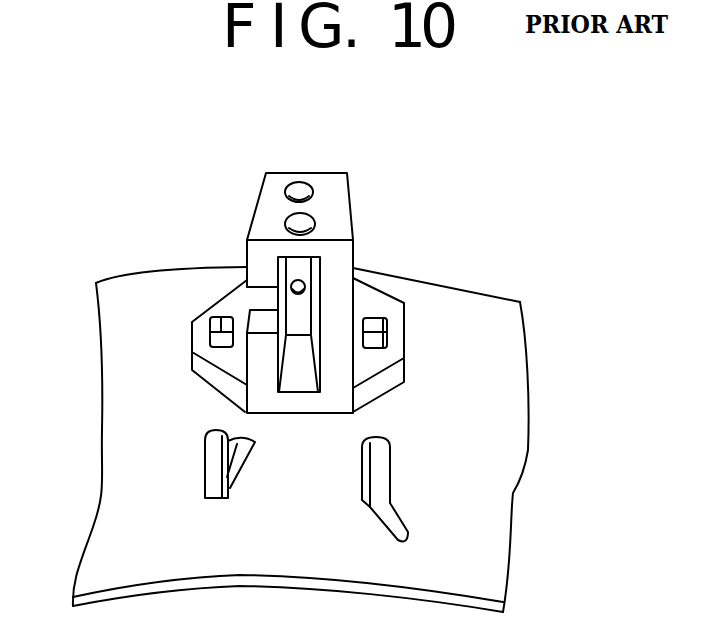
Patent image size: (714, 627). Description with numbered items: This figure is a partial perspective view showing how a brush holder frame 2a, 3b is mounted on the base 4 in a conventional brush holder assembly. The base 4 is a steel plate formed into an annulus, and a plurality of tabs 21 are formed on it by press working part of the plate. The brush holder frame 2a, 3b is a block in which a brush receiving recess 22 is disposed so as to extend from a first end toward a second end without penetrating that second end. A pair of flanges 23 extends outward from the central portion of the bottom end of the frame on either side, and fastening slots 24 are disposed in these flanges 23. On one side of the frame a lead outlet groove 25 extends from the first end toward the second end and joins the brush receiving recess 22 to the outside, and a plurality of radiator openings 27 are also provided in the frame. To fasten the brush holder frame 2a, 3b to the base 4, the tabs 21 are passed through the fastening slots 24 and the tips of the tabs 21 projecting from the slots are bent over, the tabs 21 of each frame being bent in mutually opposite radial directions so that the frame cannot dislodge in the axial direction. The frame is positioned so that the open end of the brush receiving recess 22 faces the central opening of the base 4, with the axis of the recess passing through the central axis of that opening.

The brush holder frame 2a is at (342, 282).
The brush holder frame 3b is at (342, 282).
The base 4 is at (492, 372).
The tabs 21 is at (217, 457).
The brush receiving recess 22 is at (298, 373).
The flanges 23 is at (201, 332).
The fastening slots 24 is at (222, 318).
The lead outlet groove 25 is at (260, 303).
The radiator openings 27 is at (297, 190).